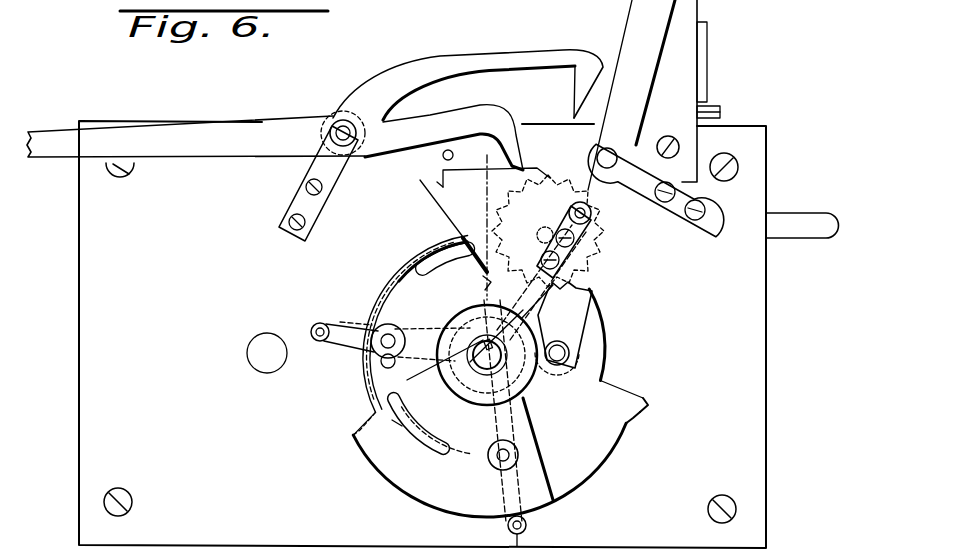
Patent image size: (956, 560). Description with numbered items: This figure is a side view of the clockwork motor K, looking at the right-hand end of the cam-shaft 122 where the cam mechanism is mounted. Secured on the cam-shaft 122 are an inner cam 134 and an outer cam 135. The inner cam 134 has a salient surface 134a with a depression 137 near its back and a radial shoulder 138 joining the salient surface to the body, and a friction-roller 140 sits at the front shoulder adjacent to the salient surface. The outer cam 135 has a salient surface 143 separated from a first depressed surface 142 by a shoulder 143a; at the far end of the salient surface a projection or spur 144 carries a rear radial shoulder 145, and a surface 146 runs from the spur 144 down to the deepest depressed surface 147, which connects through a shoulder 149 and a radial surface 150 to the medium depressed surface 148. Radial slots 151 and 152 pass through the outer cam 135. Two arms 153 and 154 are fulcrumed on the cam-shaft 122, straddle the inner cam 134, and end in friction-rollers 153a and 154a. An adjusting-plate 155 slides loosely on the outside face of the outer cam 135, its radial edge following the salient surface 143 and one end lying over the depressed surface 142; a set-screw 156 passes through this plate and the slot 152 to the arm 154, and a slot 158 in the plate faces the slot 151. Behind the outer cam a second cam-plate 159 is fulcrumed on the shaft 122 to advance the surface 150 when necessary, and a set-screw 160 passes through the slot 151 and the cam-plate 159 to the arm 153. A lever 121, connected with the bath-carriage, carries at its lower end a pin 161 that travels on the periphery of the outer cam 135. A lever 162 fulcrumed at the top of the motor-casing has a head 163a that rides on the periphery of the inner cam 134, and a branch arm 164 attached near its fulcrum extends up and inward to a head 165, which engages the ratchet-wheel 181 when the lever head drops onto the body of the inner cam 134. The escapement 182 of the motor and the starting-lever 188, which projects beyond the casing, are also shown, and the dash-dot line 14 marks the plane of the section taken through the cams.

The center line / axis 14 is at (543, 536).
The lever 121 is at (620, 20).
The cam-shaft 122 is at (484, 342).
The inner cam 134 is at (535, 180).
The salient surface 134a is at (454, 207).
The outer cam 135 is at (410, 336).
The depression 137 is at (437, 184).
The radial surface or shoulder 138 is at (426, 203).
The friction-roller 140 is at (598, 222).
The depressed surface 142 is at (378, 350).
The salient surface 143 is at (430, 506).
The shoulder 143a is at (352, 434).
The projection 144 is at (648, 403).
The radial surface or shoulder 145 is at (638, 415).
The surface or shoulder 146 is at (617, 395).
The depressed surface 147 is at (511, 323).
The medium depressed surface 148 is at (545, 240).
The shoulder 149 is at (565, 325).
The shoulder or depressed surface 150 is at (475, 236).
The radial slot 151 is at (430, 268).
The radial slot 152 is at (430, 438).
The arm 153 is at (366, 328).
The friction-roller 153a is at (317, 326).
The arm 154 is at (528, 523).
The friction-roller 154a is at (508, 528).
The adjusting-plate 155 is at (434, 446).
The set-screw 156 is at (518, 452).
The slot 158 is at (402, 428).
The second cam-plate 159 is at (484, 285).
The set-screw 160 is at (382, 368).
The pin 161 is at (557, 346).
The lever 162 is at (196, 136).
The lever body 163a is at (522, 149).
The branch arm 164 is at (468, 85).
The head 165 is at (578, 92).
The ratchet-wheel 181 is at (557, 184).
The escapement 182 is at (666, 91).
The starting-lever 188 is at (803, 208).
The motor K is at (422, 285).